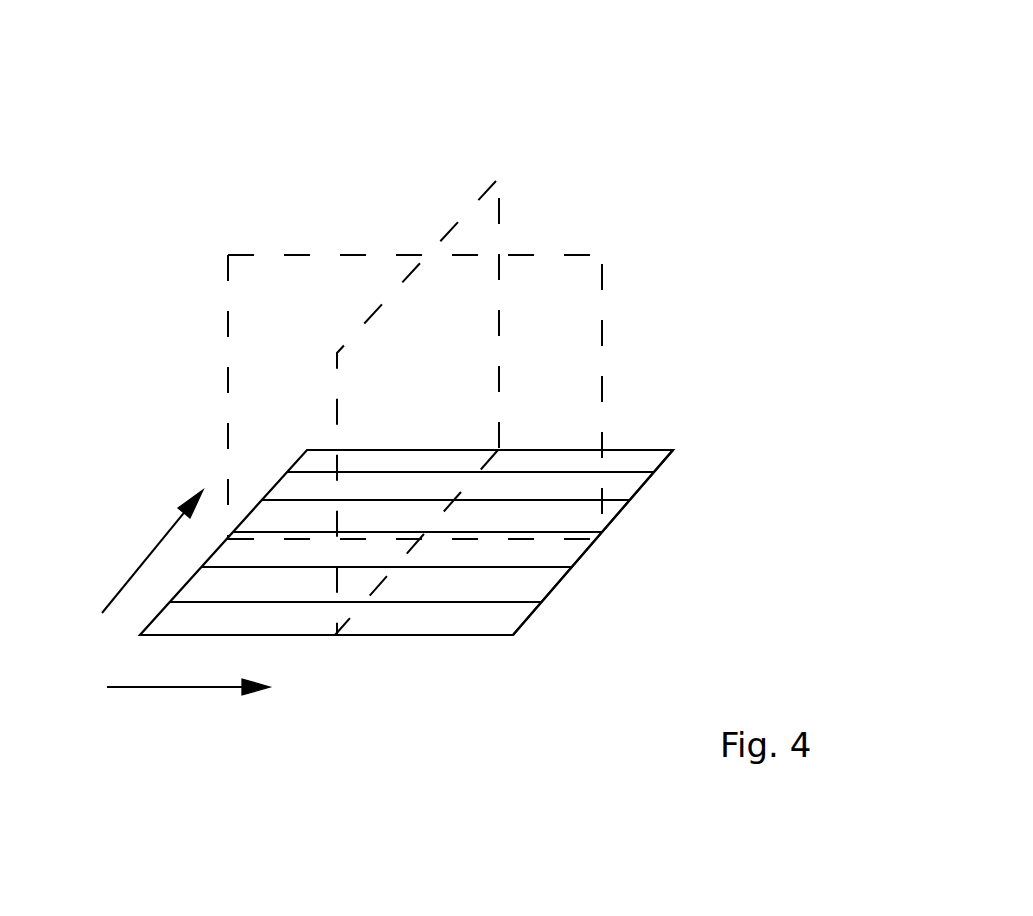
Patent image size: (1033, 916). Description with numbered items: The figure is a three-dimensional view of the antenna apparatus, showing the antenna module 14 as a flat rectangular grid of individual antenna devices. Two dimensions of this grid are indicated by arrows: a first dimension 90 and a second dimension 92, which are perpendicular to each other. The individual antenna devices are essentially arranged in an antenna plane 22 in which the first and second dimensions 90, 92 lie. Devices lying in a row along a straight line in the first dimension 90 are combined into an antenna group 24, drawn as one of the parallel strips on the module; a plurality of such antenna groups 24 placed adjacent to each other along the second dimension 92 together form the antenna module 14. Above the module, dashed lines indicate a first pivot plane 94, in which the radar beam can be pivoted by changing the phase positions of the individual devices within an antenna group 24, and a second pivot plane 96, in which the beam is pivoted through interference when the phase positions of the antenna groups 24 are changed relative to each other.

The antenna module 14 is at (638, 450).
The antenna plane 22 is at (650, 478).
The antenna group 24 is at (507, 622).
The first dimension 90 is at (180, 690).
The second dimension 92 is at (143, 560).
The first pivot plane 94 is at (602, 275).
The second pivot plane 96 is at (477, 202).